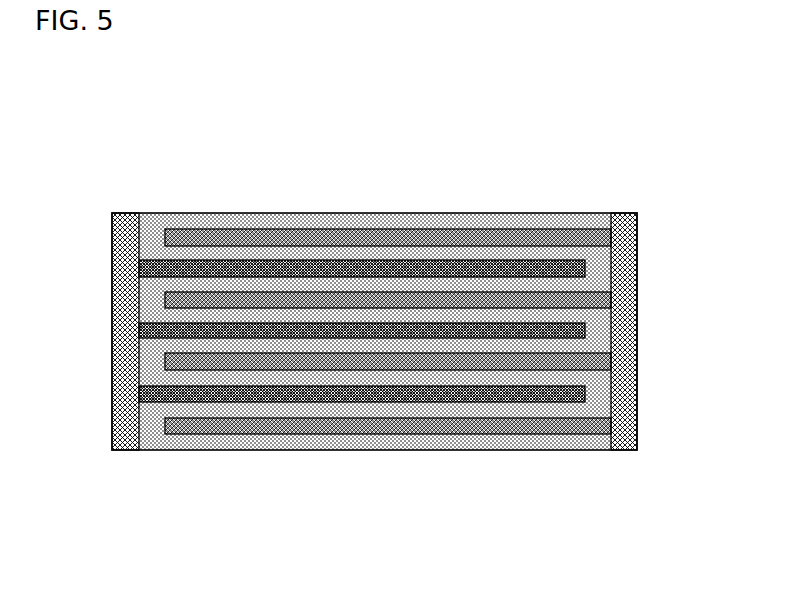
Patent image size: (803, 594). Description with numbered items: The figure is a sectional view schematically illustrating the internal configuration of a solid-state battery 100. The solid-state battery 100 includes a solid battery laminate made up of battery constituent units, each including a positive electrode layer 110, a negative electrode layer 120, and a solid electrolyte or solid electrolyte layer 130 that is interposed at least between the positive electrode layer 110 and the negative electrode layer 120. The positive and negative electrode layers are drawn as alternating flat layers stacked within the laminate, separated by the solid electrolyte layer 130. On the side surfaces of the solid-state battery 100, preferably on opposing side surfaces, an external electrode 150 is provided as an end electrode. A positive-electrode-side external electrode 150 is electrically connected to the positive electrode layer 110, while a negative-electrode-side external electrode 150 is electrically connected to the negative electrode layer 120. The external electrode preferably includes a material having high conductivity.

The solid-state battery 100 is at (212, 182).
The positive electrode layer 110 is at (575, 266).
The negative electrode layer 120 is at (593, 300).
The solid electrolyte layer 130 is at (567, 283).
The external electrode 150 is at (125, 442).